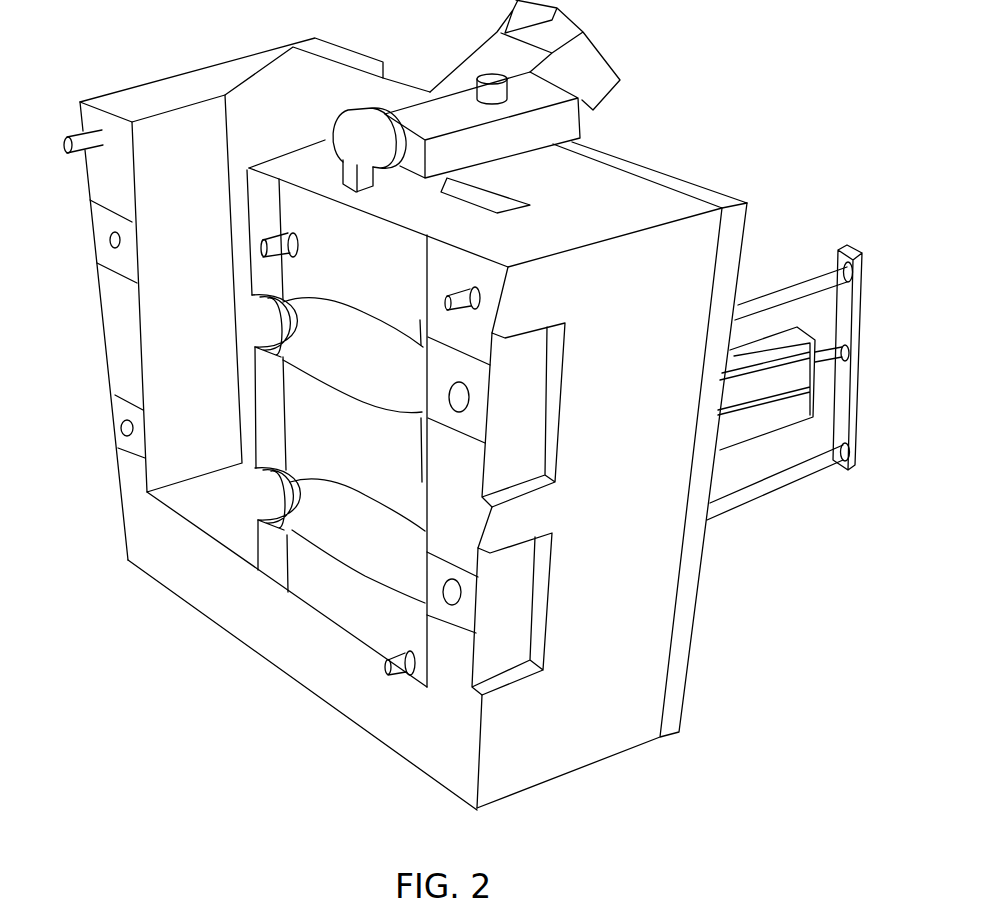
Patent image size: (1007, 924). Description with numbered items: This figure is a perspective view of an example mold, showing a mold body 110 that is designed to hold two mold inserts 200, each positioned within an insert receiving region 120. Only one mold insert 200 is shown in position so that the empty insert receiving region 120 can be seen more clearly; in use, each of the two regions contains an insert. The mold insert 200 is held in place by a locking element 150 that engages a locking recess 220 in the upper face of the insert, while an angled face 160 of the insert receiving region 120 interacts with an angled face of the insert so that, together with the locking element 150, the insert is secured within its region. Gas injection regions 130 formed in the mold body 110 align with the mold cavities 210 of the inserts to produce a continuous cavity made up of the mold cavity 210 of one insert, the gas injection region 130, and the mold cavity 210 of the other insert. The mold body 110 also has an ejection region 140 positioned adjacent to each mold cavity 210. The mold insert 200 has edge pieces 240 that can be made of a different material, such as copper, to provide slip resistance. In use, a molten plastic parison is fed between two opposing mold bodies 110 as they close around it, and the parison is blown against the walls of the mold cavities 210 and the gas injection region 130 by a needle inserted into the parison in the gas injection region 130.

The mold body 110 is at (583, 755).
The insert receiving region 120 is at (180, 142).
The gas injection region 130 is at (263, 325).
The ejection region 140 is at (107, 227).
The locking element 150 is at (572, 132).
The angled face 160 is at (235, 538).
The mold insert 200 is at (332, 603).
The mold cavity 210 is at (358, 323).
The locking recess 220 is at (476, 212).
The edge piece 240 is at (292, 432).